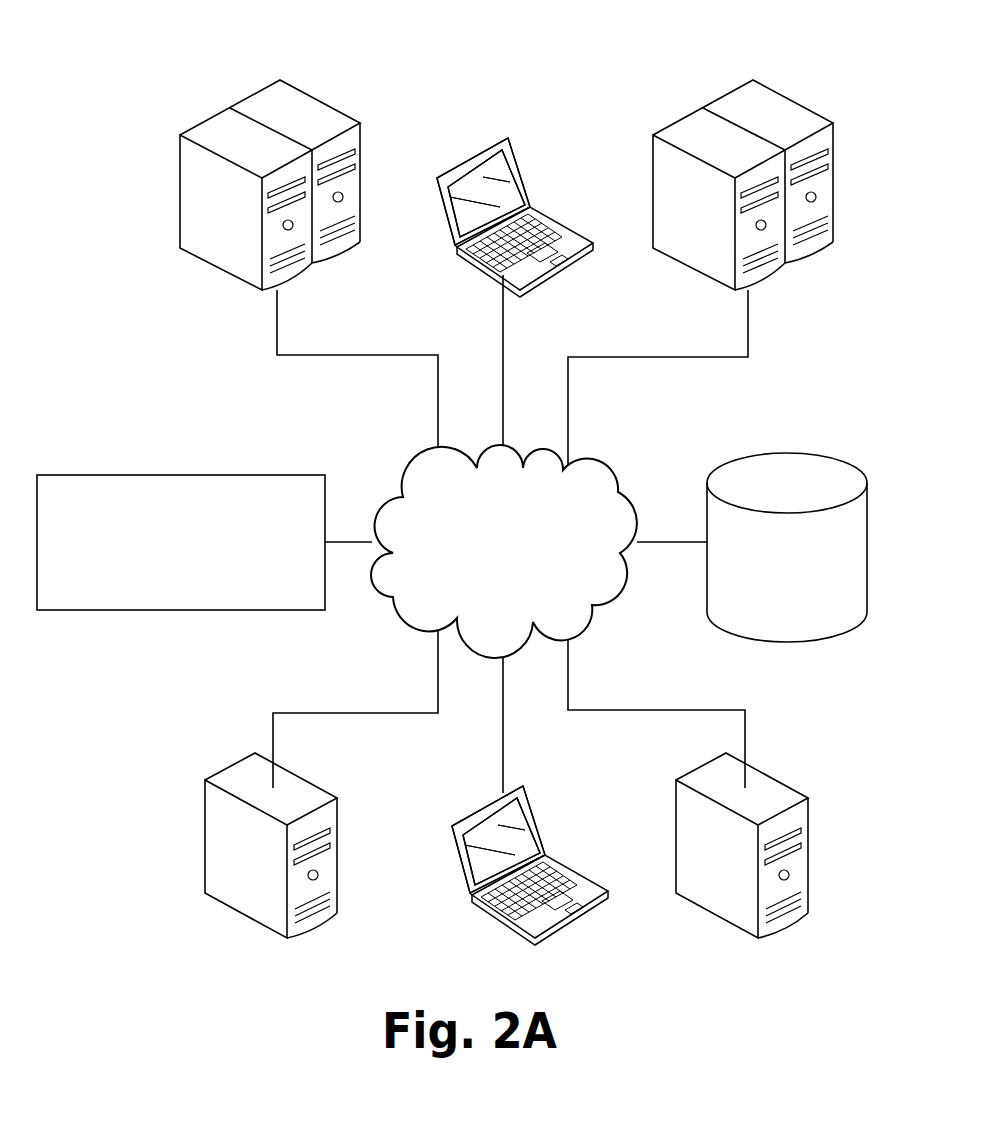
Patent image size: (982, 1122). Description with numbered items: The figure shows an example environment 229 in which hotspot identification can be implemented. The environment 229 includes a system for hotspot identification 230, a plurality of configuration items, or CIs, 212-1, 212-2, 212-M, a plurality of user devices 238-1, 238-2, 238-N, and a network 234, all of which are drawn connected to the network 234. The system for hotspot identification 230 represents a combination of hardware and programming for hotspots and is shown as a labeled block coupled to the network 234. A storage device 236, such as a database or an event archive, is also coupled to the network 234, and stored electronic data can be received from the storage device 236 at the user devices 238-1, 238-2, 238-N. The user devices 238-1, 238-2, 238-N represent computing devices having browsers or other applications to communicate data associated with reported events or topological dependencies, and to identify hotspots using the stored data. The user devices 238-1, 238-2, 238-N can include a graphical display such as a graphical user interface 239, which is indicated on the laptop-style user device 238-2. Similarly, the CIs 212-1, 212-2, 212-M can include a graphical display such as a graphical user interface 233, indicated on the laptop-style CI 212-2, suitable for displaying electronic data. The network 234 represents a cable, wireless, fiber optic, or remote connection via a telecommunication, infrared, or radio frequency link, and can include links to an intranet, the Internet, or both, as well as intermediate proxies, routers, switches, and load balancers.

The environment 229 is at (157, 57).
The configuration item (CI) 212-1 is at (303, 108).
The configuration item (CI) 212-2 is at (519, 197).
The configuration item (CI) 212-M is at (775, 108).
The graphical user interface 233 is at (500, 165).
The system for hotspot identification 230 is at (170, 473).
The network 234 is at (607, 462).
The storage device 236 is at (800, 452).
The user device 238-1 is at (292, 795).
The user device 238-2 is at (535, 844).
The user device 238-N is at (762, 795).
The graphical user interface 239 is at (518, 812).